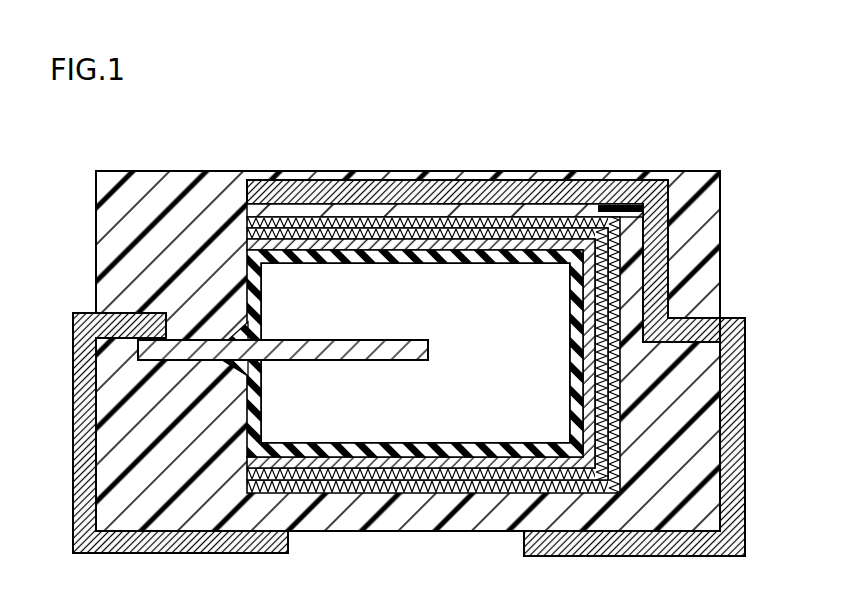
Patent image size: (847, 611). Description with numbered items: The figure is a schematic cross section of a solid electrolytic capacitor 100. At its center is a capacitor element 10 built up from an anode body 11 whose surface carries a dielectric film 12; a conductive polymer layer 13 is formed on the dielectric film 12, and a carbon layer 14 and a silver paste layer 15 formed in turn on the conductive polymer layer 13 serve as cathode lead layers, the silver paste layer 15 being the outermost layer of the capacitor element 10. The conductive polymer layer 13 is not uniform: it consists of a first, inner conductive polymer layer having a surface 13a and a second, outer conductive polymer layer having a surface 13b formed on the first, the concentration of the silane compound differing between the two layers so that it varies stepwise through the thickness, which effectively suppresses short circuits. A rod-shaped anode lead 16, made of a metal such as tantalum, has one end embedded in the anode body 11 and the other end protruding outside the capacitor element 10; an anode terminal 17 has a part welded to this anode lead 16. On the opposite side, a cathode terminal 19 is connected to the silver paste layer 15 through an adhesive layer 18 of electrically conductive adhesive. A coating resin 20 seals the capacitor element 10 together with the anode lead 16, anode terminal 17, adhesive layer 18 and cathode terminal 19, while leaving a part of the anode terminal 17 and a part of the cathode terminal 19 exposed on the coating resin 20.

The solid electrolytic capacitor 100 is at (745, 112).
The capacitor element 10 is at (530, 405).
The anode body 11 is at (530, 348).
The dielectric film 12 is at (588, 372).
The conductive polymer layer 13 is at (522, 416).
The surface of first conductive polymer layer 13a is at (448, 443).
The surface of second conductive polymer layer 13b is at (440, 470).
The carbon layer 14 is at (608, 433).
The silver paste layer 15 is at (618, 462).
The anode lead 16 is at (158, 352).
The anode terminal 17 is at (80, 407).
The adhesive layer 18 is at (527, 210).
The cathode terminal 19 is at (610, 212).
The coating resin 20 is at (688, 212).